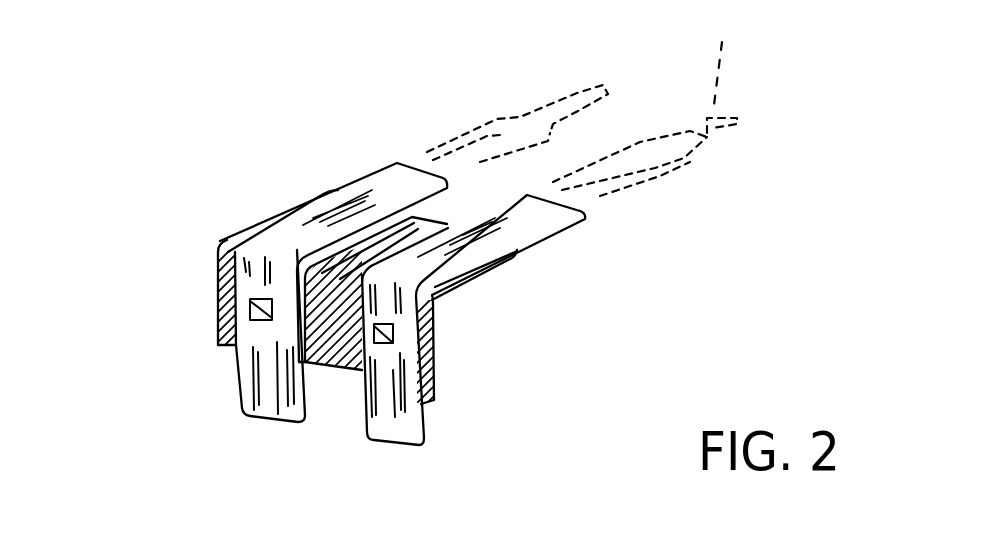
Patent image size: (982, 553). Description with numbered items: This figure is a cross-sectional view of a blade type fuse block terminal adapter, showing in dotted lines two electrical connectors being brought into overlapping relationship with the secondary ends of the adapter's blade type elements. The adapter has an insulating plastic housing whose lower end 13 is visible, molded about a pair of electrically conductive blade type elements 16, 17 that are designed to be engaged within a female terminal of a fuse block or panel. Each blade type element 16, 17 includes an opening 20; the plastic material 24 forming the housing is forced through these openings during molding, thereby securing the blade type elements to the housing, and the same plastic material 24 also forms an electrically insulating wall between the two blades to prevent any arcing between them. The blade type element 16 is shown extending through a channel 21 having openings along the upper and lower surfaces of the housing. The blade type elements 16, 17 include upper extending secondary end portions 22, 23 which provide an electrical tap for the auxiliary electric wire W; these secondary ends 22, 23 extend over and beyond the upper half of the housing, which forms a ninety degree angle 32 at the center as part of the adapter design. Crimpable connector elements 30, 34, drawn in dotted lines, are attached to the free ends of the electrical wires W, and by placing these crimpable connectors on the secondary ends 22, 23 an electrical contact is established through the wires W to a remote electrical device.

The lower end 13 is at (348, 371).
The blade type element 16 is at (240, 394).
The blade type element 17 is at (433, 419).
The opening 20 is at (256, 307).
The channel 21 is at (240, 274).
The secondary end portion 22 is at (372, 183).
The secondary end portion 23 is at (530, 223).
The plastic material / insulating wall 24 is at (325, 365).
The crimpable connector element 30 is at (509, 134).
The 90 degree angle 32 is at (433, 309).
The crimpable connector element 34 is at (687, 158).
The wire W is at (733, 52).